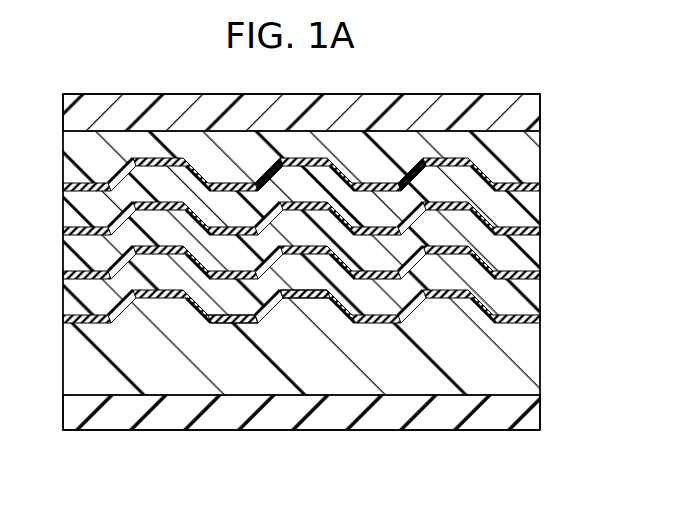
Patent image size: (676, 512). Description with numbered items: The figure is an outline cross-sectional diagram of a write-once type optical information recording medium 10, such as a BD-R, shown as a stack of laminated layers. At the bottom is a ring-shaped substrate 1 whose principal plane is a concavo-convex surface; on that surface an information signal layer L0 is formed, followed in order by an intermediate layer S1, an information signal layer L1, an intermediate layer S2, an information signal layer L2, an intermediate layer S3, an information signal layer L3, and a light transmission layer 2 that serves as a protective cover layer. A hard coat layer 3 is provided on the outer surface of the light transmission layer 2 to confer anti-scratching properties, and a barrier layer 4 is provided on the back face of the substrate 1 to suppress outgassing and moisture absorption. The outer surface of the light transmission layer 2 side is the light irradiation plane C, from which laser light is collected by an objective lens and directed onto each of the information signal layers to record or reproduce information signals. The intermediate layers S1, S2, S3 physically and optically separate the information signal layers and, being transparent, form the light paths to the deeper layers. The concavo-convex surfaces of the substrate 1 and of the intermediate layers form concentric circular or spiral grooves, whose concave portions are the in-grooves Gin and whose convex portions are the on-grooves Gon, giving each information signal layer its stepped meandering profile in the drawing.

The optical information recording medium 10 is at (143, 73).
The light irradiation plane C is at (502, 86).
The hard coat layer 3 is at (522, 112).
The light transmission layer 2 is at (522, 148).
The information signal layer L3 is at (522, 187).
The intermediate layer S3 is at (522, 207).
The information signal layer L2 is at (522, 232).
The intermediate layer S2 is at (522, 252).
The information signal layer L1 is at (522, 275).
The intermediate layer S1 is at (522, 297).
The information signal layer L0 is at (522, 320).
The substrate 1 is at (522, 362).
The barrier layer 4 is at (522, 410).
The in-groove Gin is at (237, 323).
The on-groove Gon is at (290, 300).